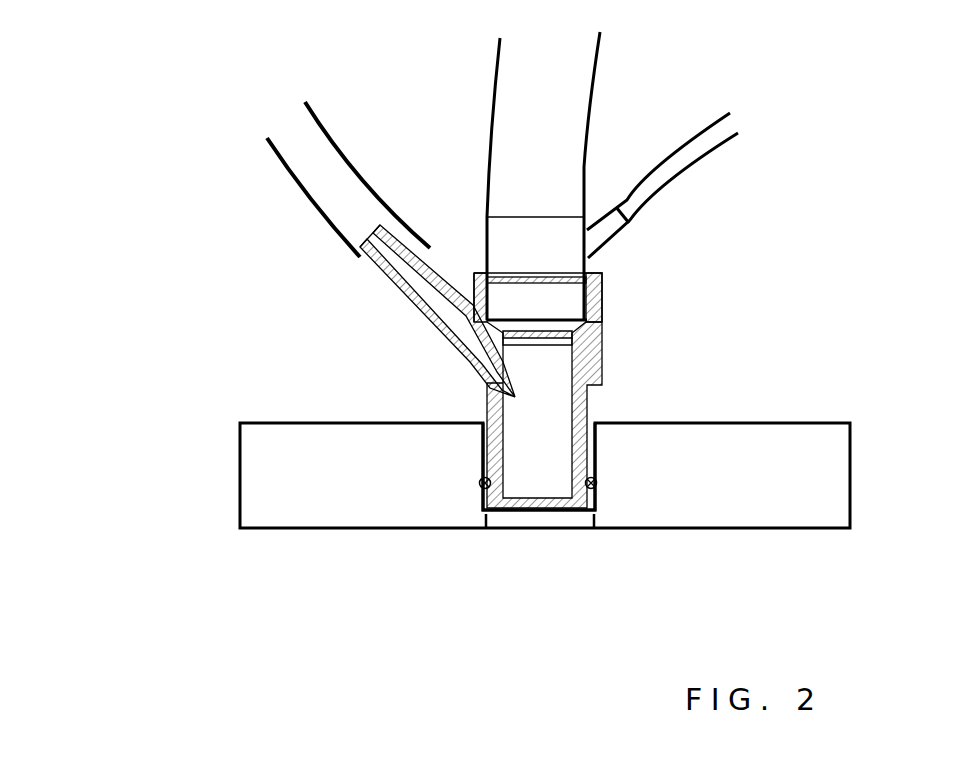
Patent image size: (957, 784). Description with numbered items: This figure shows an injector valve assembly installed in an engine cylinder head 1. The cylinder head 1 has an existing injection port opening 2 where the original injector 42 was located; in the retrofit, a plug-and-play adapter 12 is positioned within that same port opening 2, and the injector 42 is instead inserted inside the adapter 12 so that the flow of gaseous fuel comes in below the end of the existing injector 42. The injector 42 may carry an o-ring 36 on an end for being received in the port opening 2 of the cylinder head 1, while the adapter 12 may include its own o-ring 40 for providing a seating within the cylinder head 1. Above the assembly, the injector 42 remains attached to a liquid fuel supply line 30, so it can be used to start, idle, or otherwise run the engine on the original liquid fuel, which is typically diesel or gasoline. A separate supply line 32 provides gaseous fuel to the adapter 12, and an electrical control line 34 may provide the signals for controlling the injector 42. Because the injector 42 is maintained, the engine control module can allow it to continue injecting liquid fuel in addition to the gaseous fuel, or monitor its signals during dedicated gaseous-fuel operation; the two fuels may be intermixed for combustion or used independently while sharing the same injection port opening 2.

The cylinder head 1 is at (792, 514).
The injection port opening 2 is at (525, 520).
The adapter 12 is at (583, 410).
The liquid fuel supply line 30 is at (510, 72).
The supply line 32 is at (287, 150).
The electrical control line 34 is at (690, 163).
The o-ring 36 is at (586, 325).
The o-ring 40 is at (472, 482).
The injector 42 is at (558, 288).